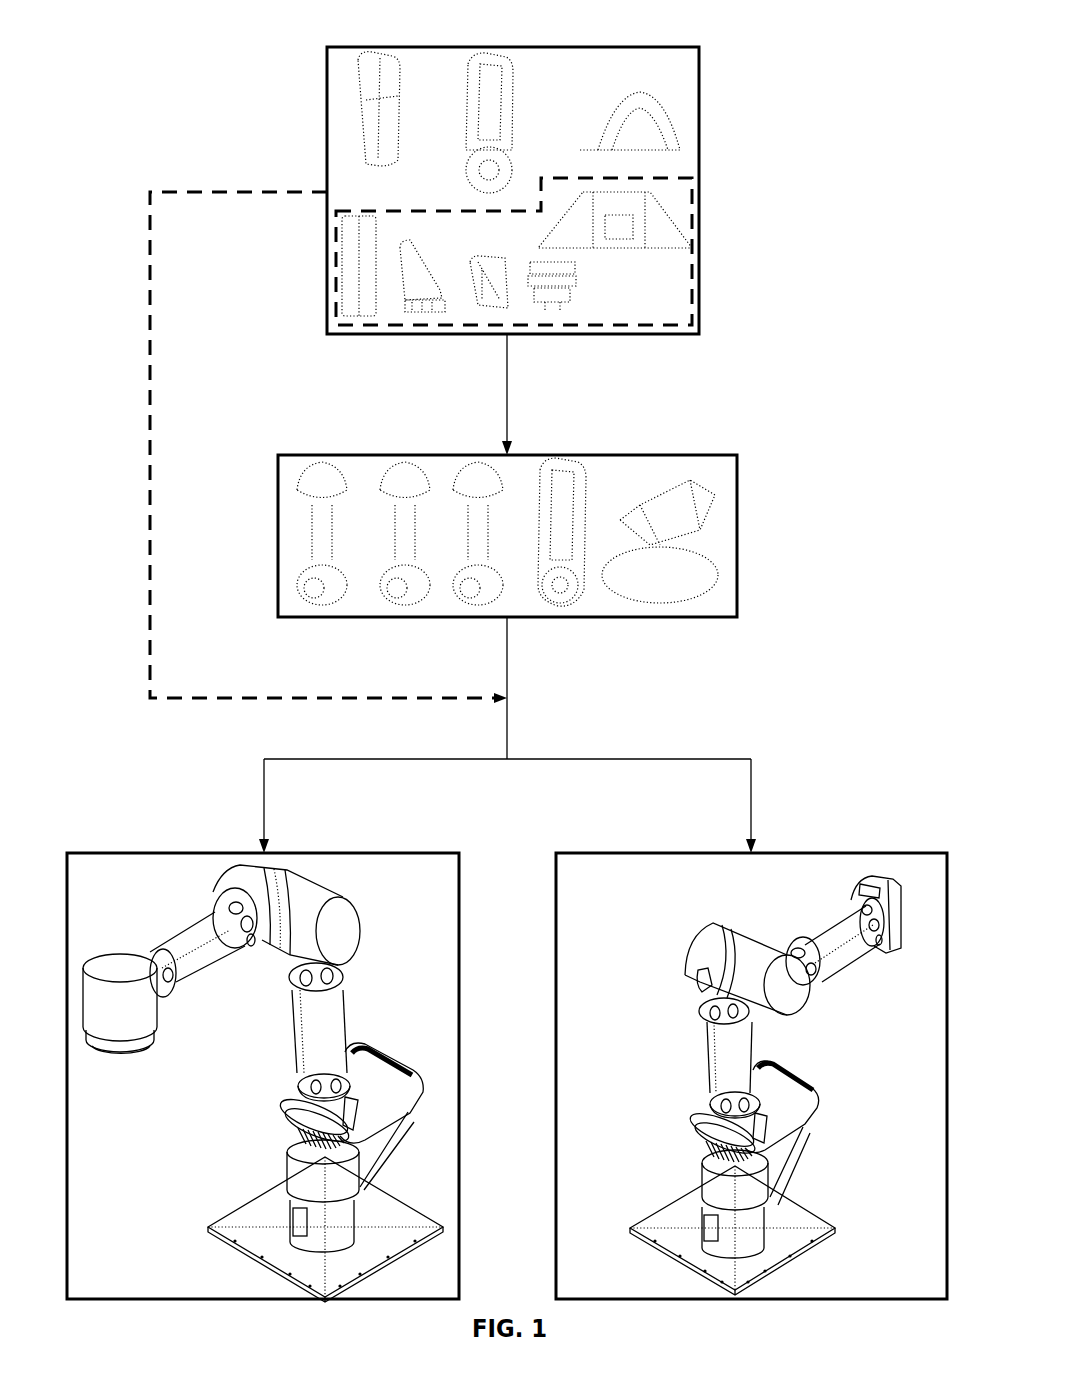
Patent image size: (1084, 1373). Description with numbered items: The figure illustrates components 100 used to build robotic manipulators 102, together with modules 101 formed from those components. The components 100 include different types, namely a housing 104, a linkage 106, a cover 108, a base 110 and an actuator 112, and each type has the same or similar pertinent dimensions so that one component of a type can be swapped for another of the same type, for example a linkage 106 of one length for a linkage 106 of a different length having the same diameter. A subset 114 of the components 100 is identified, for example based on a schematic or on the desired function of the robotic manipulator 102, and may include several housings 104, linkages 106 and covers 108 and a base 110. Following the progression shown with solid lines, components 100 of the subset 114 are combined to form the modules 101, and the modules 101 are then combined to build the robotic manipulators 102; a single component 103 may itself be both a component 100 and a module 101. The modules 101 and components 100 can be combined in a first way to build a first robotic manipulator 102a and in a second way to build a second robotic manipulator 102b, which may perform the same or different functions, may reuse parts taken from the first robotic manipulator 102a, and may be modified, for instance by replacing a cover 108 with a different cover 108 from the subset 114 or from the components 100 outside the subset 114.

The components 100 is at (305, 52).
The modules 101 is at (715, 425).
The robotic manipulators 102 is at (730, 700).
The first robotic manipulator 102a is at (146, 818).
The second robotic manipulator 102b is at (858, 808).
The component 103 is at (508, 72).
The housing 104 is at (405, 305).
The linkage 106 is at (345, 256).
The cover 108 is at (505, 306).
The base 110 is at (663, 212).
The actuator 112 is at (573, 283).
The subset 114 is at (692, 316).